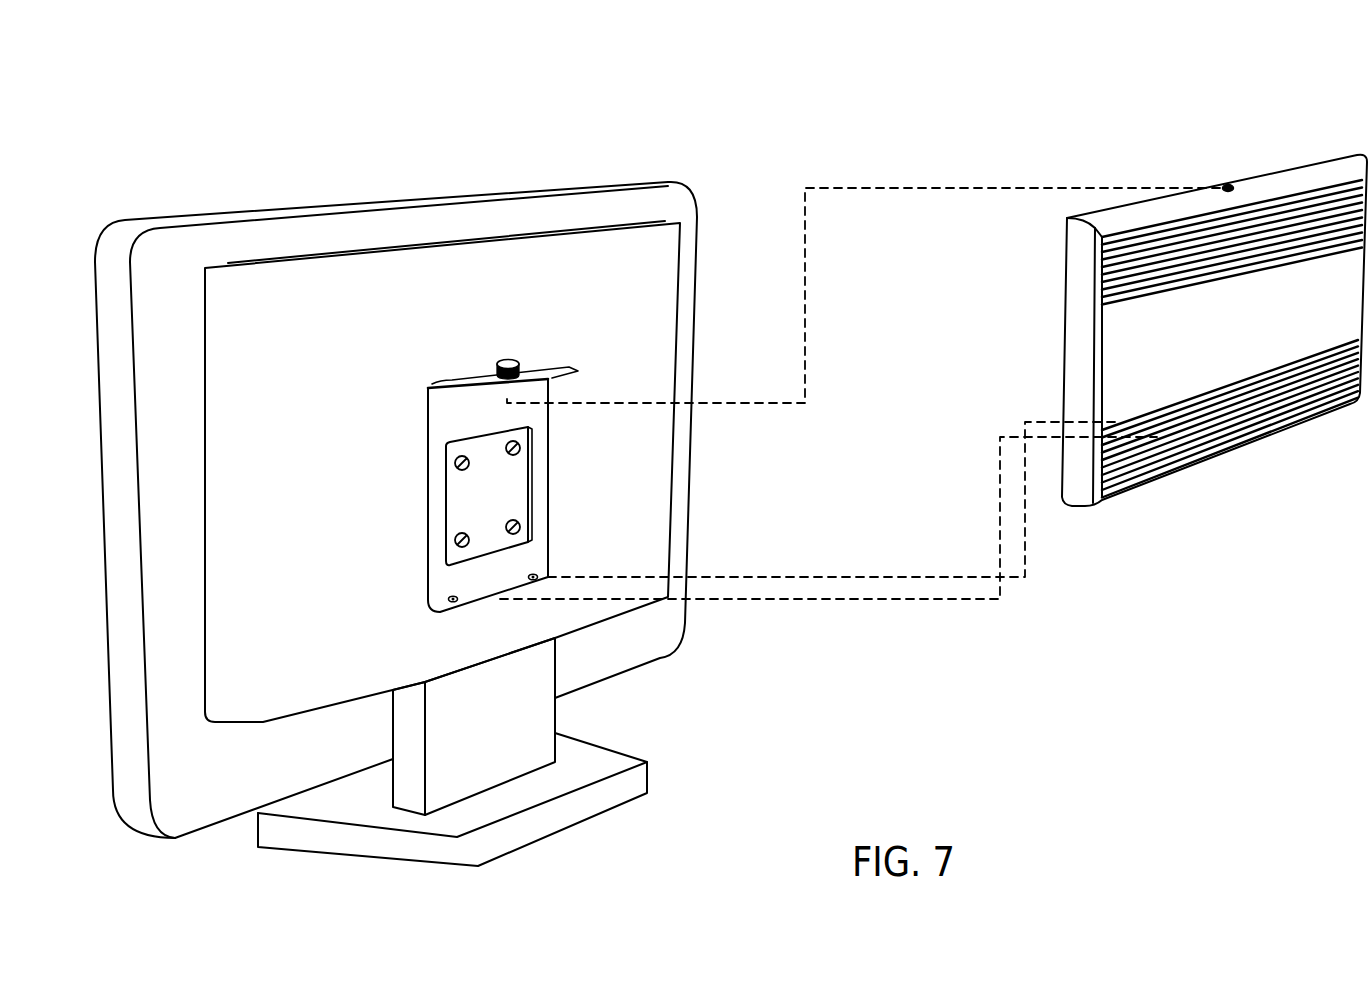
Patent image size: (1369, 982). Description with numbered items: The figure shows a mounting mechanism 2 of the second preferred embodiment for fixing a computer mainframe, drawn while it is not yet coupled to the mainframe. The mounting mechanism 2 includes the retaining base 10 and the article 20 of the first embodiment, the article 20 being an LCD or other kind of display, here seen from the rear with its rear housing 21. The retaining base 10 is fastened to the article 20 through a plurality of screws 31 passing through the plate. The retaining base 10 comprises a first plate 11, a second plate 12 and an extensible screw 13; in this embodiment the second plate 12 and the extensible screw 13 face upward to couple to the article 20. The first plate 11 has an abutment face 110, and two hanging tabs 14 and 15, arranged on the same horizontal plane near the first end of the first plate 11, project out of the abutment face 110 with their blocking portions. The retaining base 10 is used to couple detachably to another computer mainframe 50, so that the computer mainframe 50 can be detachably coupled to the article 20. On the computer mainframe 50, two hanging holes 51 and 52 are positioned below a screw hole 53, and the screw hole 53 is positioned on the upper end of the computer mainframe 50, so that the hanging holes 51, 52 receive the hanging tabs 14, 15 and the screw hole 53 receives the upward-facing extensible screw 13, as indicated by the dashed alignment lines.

The mounting mechanism 2 is at (485, 187).
The retaining base 10 is at (472, 365).
The abutment face 110 is at (438, 413).
The first plate 11 is at (503, 593).
The second plate 12 is at (437, 407).
The extensible screw 13 is at (507, 358).
The hanging tab 14 is at (455, 602).
The hanging tab 15 is at (535, 579).
The article 20 is at (510, 215).
The rear casing 21 is at (645, 267).
The screws 31 is at (520, 450).
The computer mainframe 50 is at (1293, 180).
The hanging hole 51 is at (1173, 437).
The hanging hole 52 is at (1233, 422).
The screw hole 53 is at (1228, 188).